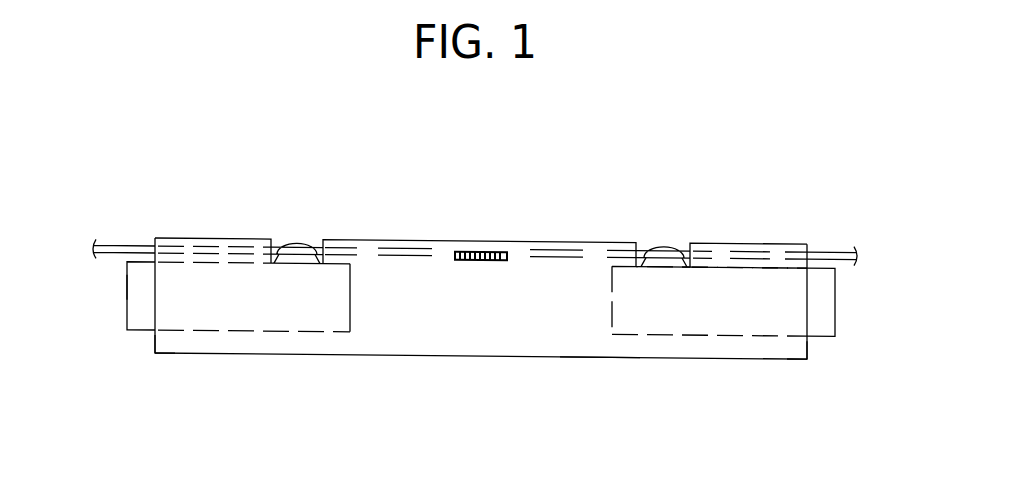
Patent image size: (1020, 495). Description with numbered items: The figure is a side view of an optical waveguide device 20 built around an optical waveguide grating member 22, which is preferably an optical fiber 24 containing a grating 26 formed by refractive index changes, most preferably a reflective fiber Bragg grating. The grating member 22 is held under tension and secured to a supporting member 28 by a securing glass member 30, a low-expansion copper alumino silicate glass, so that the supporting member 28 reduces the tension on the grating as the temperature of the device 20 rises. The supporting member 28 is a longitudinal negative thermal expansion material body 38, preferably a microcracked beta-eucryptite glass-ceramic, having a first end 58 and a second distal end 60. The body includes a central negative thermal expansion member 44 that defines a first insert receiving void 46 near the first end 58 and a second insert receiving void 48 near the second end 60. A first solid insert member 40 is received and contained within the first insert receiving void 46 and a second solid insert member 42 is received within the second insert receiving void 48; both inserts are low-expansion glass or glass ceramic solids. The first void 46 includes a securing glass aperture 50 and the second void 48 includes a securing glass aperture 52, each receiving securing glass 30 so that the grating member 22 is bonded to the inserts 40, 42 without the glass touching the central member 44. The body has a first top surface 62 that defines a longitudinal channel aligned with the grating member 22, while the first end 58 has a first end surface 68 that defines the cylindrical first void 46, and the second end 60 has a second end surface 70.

The optical waveguide device 20 is at (172, 132).
The optical waveguide grating member 22 is at (521, 250).
The optical fiber 24 is at (122, 235).
The grating 26 is at (483, 245).
The supporting member 28 is at (487, 373).
The securing glass member 30 is at (298, 235).
The negative thermal expansion material body 38 is at (596, 355).
The first solid insert member 40 is at (125, 297).
The second solid insert member 42 is at (842, 302).
The central negative thermal expansion member 44 is at (510, 318).
The first insert receiving void 46 is at (279, 338).
The second insert receiving void 48 is at (720, 343).
The securing glass aperture 50 is at (320, 268).
The securing glass aperture 52 is at (700, 232).
The first end 58 is at (91, 287).
The second distal end 60 is at (853, 348).
The first top surface 62 is at (193, 223).
The first end surface 68 is at (152, 342).
The second end surface 70 is at (808, 356).